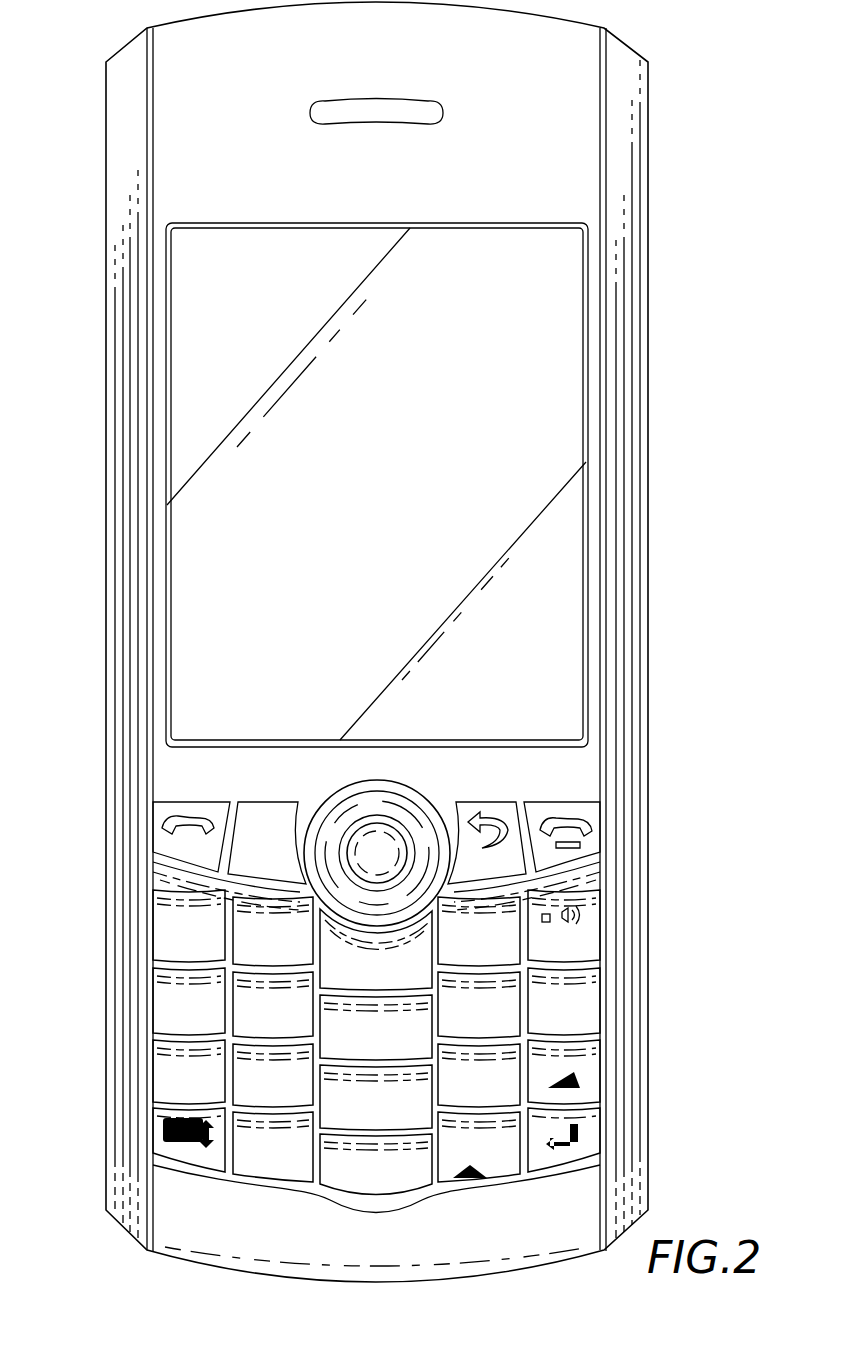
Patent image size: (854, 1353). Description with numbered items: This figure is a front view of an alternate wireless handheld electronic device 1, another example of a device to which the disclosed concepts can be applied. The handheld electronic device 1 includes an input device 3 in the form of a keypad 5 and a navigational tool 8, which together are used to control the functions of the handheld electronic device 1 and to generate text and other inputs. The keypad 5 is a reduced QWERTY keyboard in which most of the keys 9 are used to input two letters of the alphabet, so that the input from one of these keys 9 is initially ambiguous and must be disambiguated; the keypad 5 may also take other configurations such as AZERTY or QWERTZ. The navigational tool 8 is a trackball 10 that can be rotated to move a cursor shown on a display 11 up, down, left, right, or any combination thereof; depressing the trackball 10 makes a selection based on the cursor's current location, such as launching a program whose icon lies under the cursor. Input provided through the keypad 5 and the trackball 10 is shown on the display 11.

The handheld electronic device 1 is at (49, 605).
The input device 3 is at (488, 870).
The keypad 5 is at (503, 1250).
The navigational tool 8 is at (450, 796).
The keys 9 is at (162, 1048).
The trackball 10 is at (363, 838).
The display 11 is at (467, 250).